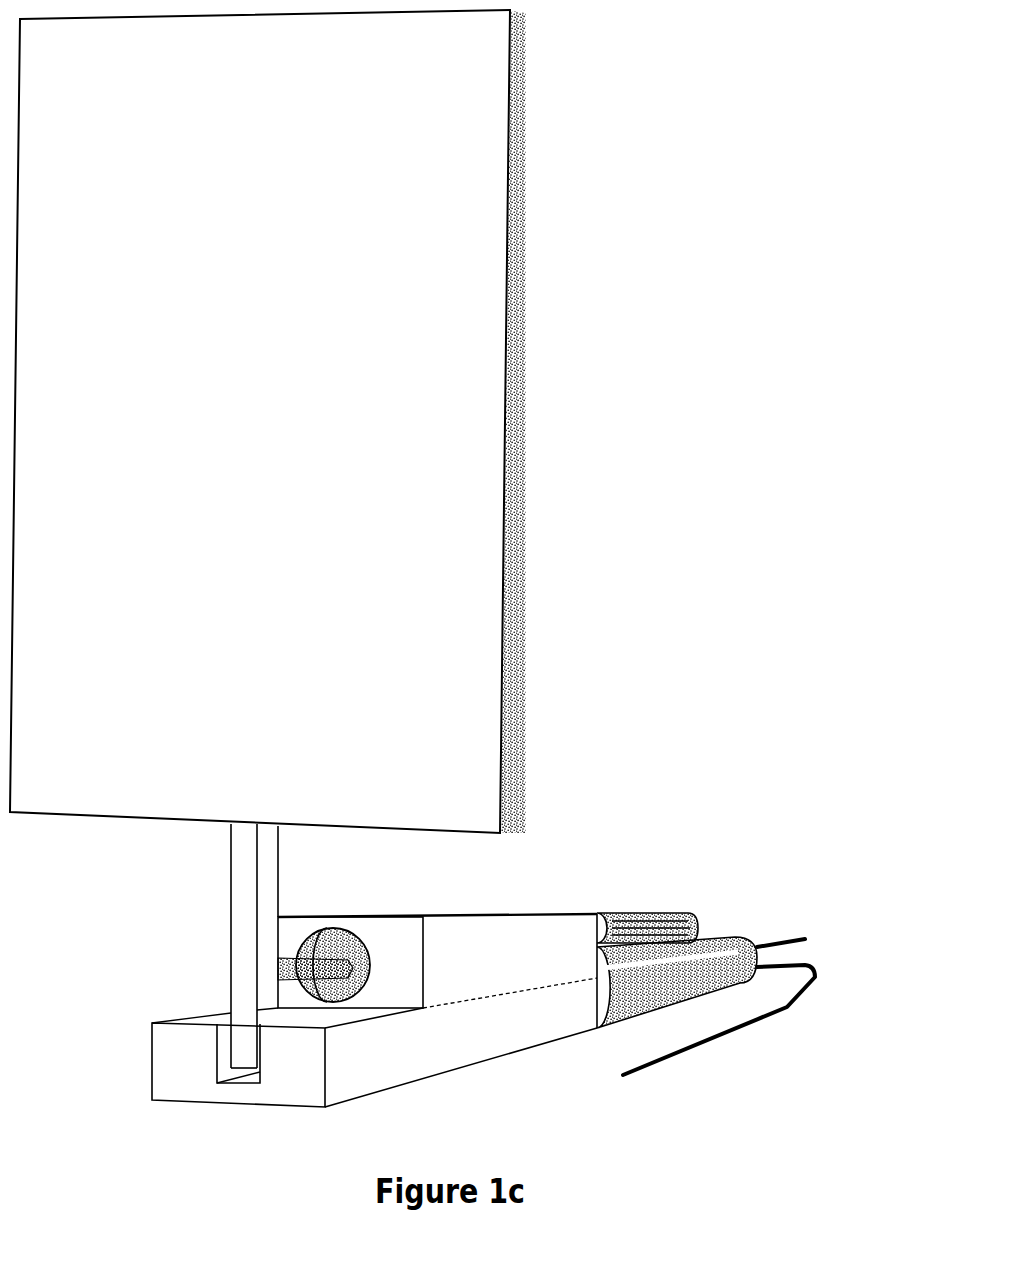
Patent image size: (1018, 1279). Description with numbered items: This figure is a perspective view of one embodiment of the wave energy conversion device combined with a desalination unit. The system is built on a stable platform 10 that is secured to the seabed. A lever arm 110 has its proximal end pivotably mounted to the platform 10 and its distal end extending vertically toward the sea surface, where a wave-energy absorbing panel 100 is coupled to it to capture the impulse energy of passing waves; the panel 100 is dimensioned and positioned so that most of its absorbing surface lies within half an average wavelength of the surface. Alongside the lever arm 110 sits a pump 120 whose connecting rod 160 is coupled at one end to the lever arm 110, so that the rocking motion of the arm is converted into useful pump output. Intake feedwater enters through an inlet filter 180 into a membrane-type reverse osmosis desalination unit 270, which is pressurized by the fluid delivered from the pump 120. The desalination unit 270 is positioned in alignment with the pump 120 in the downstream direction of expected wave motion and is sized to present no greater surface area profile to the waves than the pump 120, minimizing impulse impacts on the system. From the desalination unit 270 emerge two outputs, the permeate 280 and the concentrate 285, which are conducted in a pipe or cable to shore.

The wave-energy absorbing panel 100 is at (268, 421).
The stable platform 10 is at (374, 1042).
The lever arm 110 is at (236, 946).
The pump 120 is at (437, 961).
The connecting rod 160 is at (338, 969).
The inlet filter 180 is at (667, 905).
The desalination unit 270 is at (677, 982).
The permeate 280 is at (812, 938).
The concentrate 285 is at (617, 1077).